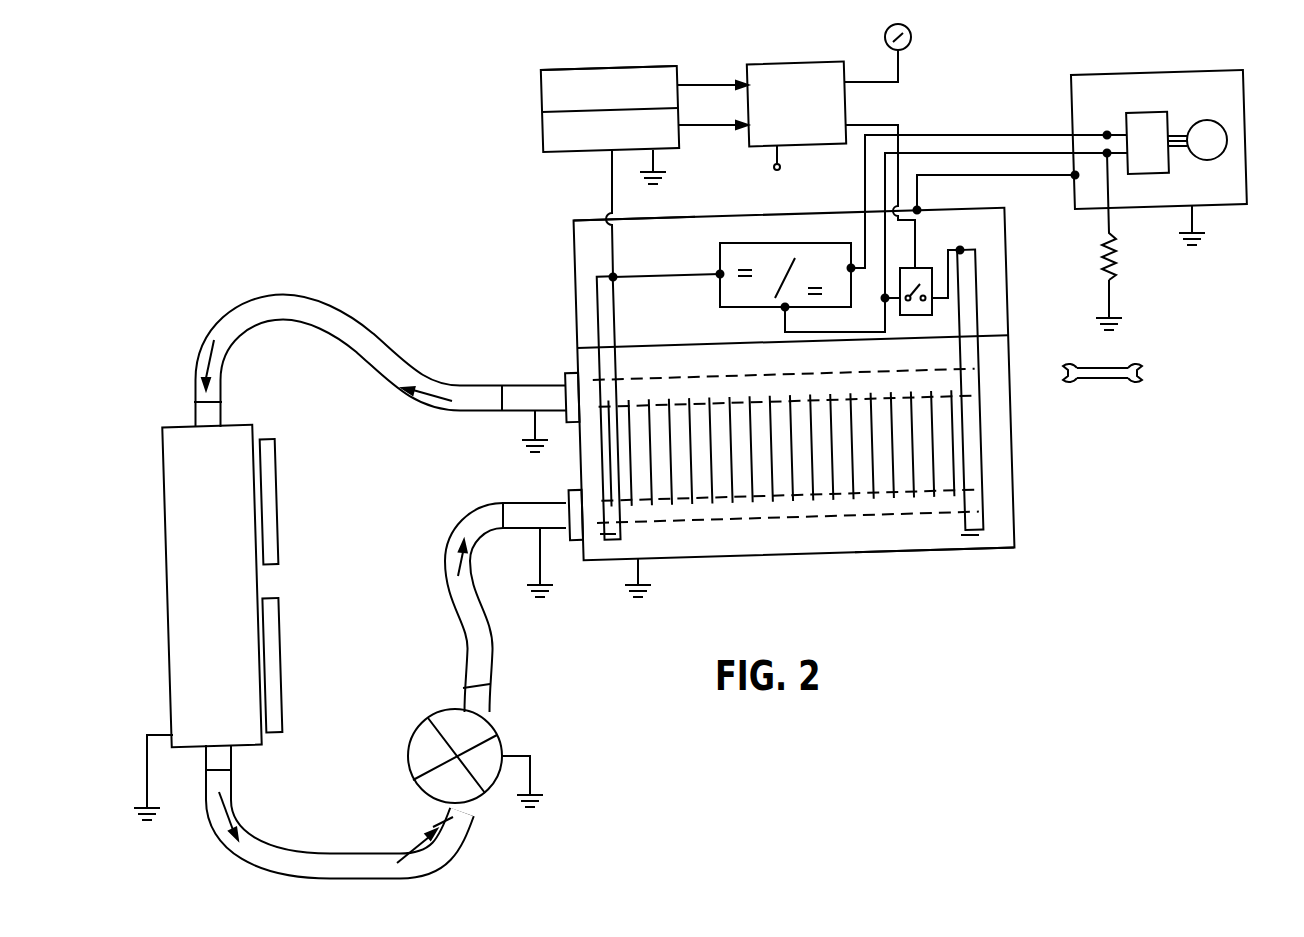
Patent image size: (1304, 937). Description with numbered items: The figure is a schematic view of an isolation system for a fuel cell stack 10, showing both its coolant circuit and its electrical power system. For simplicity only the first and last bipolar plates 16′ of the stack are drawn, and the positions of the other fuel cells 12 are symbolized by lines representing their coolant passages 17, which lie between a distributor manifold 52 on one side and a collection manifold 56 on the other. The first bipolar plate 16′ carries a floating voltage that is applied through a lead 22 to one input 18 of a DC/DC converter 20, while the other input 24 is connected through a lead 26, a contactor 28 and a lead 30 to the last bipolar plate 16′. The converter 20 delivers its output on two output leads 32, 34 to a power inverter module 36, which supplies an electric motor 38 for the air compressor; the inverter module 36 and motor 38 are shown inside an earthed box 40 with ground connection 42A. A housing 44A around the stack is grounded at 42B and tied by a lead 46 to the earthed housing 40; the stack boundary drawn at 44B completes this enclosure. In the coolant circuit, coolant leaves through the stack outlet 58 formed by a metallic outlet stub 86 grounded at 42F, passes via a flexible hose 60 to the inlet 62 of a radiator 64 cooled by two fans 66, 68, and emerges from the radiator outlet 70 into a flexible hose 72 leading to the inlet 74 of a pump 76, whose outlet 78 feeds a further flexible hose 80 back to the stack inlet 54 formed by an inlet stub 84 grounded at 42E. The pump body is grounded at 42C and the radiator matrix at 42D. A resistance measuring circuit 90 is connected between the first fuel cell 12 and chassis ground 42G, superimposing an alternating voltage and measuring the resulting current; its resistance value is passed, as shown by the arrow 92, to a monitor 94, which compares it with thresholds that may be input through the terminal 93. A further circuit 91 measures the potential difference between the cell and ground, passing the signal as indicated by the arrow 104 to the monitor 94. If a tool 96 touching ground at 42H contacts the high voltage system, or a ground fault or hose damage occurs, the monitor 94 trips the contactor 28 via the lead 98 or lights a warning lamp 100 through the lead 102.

The fuel cell stack 10 is at (1028, 536).
The fuel cell 12 is at (618, 540).
The bipolar plate 16′ is at (598, 302).
The coolant passage 17 is at (610, 476).
The input 18 is at (718, 280).
The DC/DC converter 20 is at (728, 305).
The lead 22 is at (663, 275).
The input 24 is at (783, 310).
The lead 26 is at (832, 335).
The contactor 28 is at (912, 268).
The lead 30 is at (960, 250).
The output lead 32 is at (962, 113).
The output lead 34 is at (1005, 153).
The power inverter module 36 is at (1148, 112).
The electric motor 38 is at (1228, 140).
The box 40 is at (1130, 210).
The ground connection 42A is at (1200, 222).
The ground connection 42B is at (655, 578).
The ground connection 42C is at (535, 757).
The ground connection 42D is at (147, 760).
The ground connection 42E is at (548, 578).
The ground connection 42F is at (520, 440).
The chassis ground 42G is at (670, 172).
The ground 42H is at (1120, 296).
The housing 44A is at (900, 553).
The top wall 44B is at (573, 240).
The lead 46 is at (1030, 175).
The distributor manifold 52 is at (783, 520).
The stack inlet 54 is at (518, 528).
The collection manifold 56 is at (645, 372).
The stack outlet 58 is at (540, 385).
The flexible hose 60 is at (340, 320).
The inlet 62 is at (222, 405).
The radiator 64 is at (168, 580).
The cooling fan 66 is at (277, 457).
The cooling fan 68 is at (282, 657).
The outlet 70 is at (230, 762).
The flexible hose 72 is at (315, 855).
The inlet 74 is at (452, 820).
The pump 76 is at (425, 725).
The outlet 78 is at (490, 687).
The flexible hose 80 is at (465, 615).
The inlet stub 84 is at (522, 505).
The outlet stub 86 is at (502, 410).
The resistance measuring circuit 90 is at (548, 138).
The circuit 91 is at (545, 85).
The arrow 92 is at (712, 128).
The terminal 93 is at (782, 167).
The monitor 94 is at (788, 80).
The tool 96 is at (1082, 365).
The lead 98 is at (906, 98).
The warning lamp 100 is at (912, 38).
The lead 102 is at (905, 62).
The arrow 104 is at (712, 82).